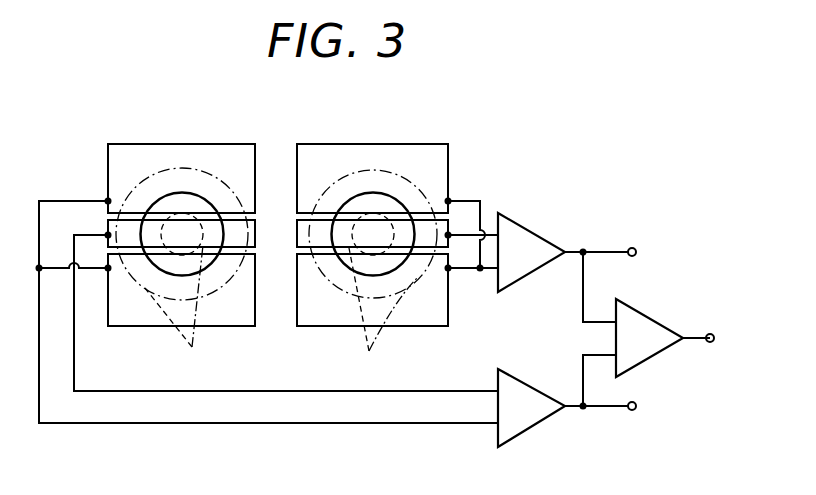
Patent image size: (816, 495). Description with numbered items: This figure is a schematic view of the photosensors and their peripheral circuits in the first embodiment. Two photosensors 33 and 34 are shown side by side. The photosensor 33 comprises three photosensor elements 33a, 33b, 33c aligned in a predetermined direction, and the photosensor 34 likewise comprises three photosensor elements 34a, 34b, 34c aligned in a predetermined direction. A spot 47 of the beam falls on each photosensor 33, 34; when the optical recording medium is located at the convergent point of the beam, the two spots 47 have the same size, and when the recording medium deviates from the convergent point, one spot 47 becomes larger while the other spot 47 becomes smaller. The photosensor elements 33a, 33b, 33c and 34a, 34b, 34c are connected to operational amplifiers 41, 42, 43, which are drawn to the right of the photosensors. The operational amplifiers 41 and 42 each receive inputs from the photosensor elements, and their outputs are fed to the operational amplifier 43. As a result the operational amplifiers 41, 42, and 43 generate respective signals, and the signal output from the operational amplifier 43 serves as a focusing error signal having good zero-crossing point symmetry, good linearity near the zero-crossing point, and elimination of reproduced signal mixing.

The photosensor 33 is at (393, 214).
The photosensor element 33a is at (440, 168).
The photosensor element 33b is at (300, 235).
The photosensor element 33c is at (443, 307).
The photosensor 34 is at (178, 223).
The photosensor element 34a is at (113, 163).
The photosensor element 34b is at (254, 233).
The photosensor element 34c is at (127, 322).
The operational amplifier 41 is at (533, 239).
The operational amplifier 42 is at (532, 418).
The operational amplifier 43 is at (653, 345).
The spot 47 is at (178, 277).